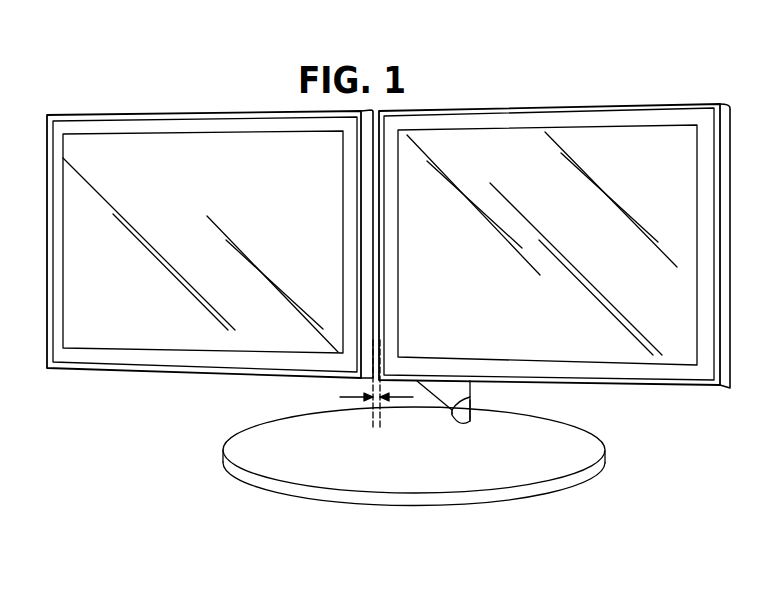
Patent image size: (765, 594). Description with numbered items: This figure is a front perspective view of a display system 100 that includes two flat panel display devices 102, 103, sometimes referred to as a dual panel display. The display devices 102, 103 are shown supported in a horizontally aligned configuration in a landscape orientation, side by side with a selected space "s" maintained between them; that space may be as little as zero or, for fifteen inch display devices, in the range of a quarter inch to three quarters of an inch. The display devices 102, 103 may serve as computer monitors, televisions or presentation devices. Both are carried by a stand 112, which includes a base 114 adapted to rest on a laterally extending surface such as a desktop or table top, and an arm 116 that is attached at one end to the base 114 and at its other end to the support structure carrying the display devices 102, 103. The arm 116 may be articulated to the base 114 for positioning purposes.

The display system 100 is at (482, 78).
The display device 102 is at (148, 113).
The display device 103 is at (538, 105).
The stand 112 is at (523, 403).
The base 114 is at (565, 452).
The arm 116 is at (460, 413).